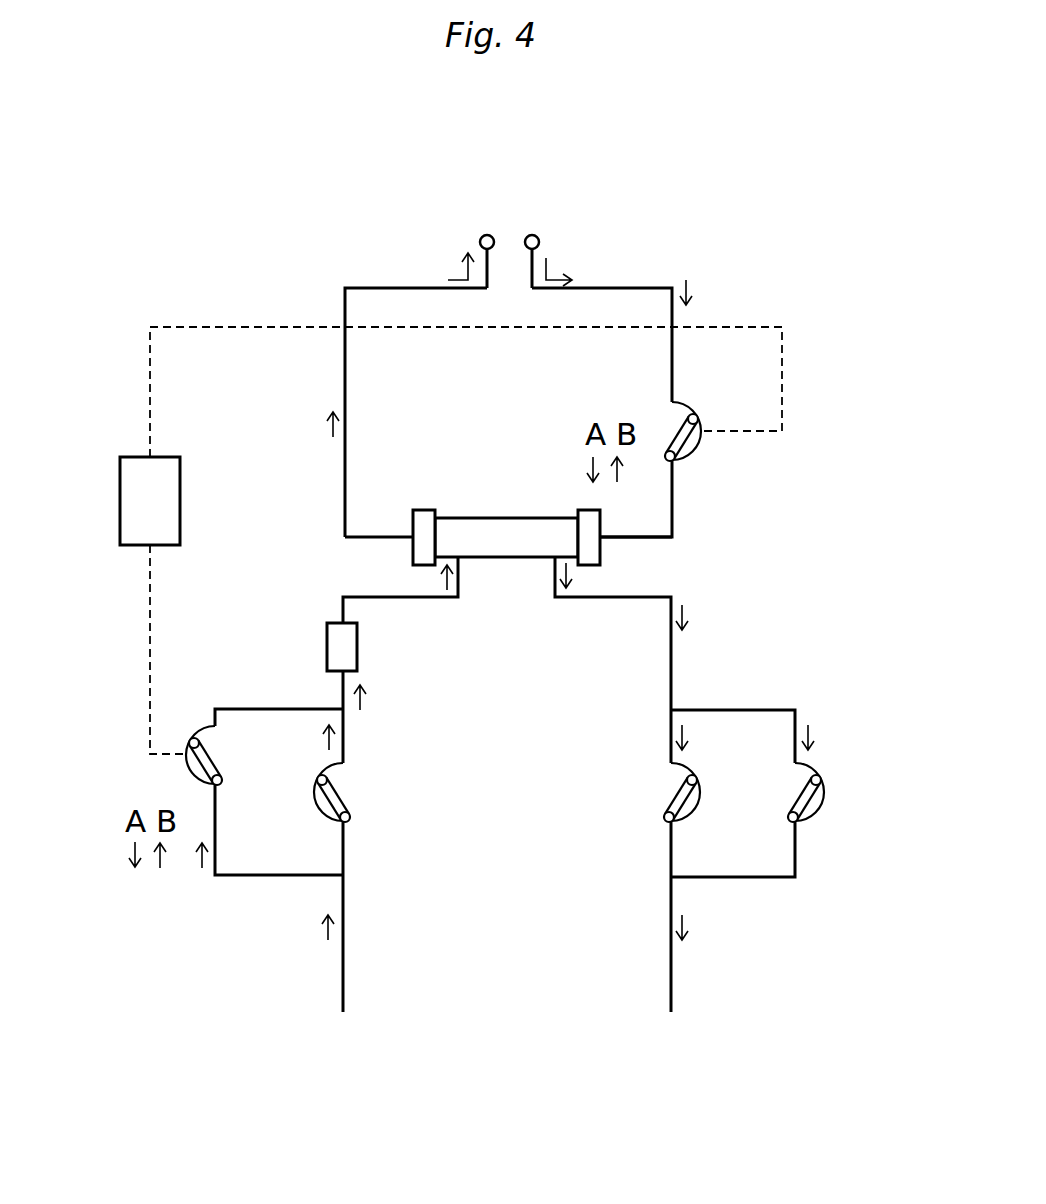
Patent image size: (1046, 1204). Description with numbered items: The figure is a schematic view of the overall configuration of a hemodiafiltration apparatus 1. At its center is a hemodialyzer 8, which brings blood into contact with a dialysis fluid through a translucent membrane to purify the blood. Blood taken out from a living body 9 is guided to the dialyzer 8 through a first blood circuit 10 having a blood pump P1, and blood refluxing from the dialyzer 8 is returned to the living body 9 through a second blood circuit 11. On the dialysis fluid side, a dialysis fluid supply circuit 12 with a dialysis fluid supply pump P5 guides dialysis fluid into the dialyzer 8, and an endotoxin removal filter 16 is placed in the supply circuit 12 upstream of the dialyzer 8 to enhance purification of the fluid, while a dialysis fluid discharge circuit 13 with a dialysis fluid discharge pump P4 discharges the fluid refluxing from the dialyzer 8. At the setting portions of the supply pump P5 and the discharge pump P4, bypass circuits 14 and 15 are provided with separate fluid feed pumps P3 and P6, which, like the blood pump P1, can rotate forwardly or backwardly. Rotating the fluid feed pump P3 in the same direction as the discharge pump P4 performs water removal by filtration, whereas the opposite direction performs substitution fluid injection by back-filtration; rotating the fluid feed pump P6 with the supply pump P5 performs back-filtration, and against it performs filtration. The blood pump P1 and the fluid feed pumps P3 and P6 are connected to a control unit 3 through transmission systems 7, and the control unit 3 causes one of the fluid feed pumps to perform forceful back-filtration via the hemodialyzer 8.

The hemodiafiltration apparatus 1 is at (884, 514).
The control unit 3 is at (120, 490).
The transmission systems 7 is at (205, 325).
The hemodialyzer 8 is at (500, 518).
The living body 9 is at (510, 239).
The first blood circuit 10 is at (635, 288).
The second blood circuit 11 is at (345, 350).
The dialysis fluid supply circuit 12 is at (343, 993).
The dialysis fluid discharge circuit 13 is at (671, 993).
The bypass circuit 14 is at (213, 871).
The bypass circuit 15 is at (795, 862).
The endotoxin removal filter 16 is at (357, 646).
The blood pump P1 is at (709, 436).
The fluid feed pump P3 is at (830, 792).
The dialysis fluid discharge pump P4 is at (660, 792).
The dialysis fluid supply pump P5 is at (353, 792).
The fluid feed pump P6 is at (225, 755).